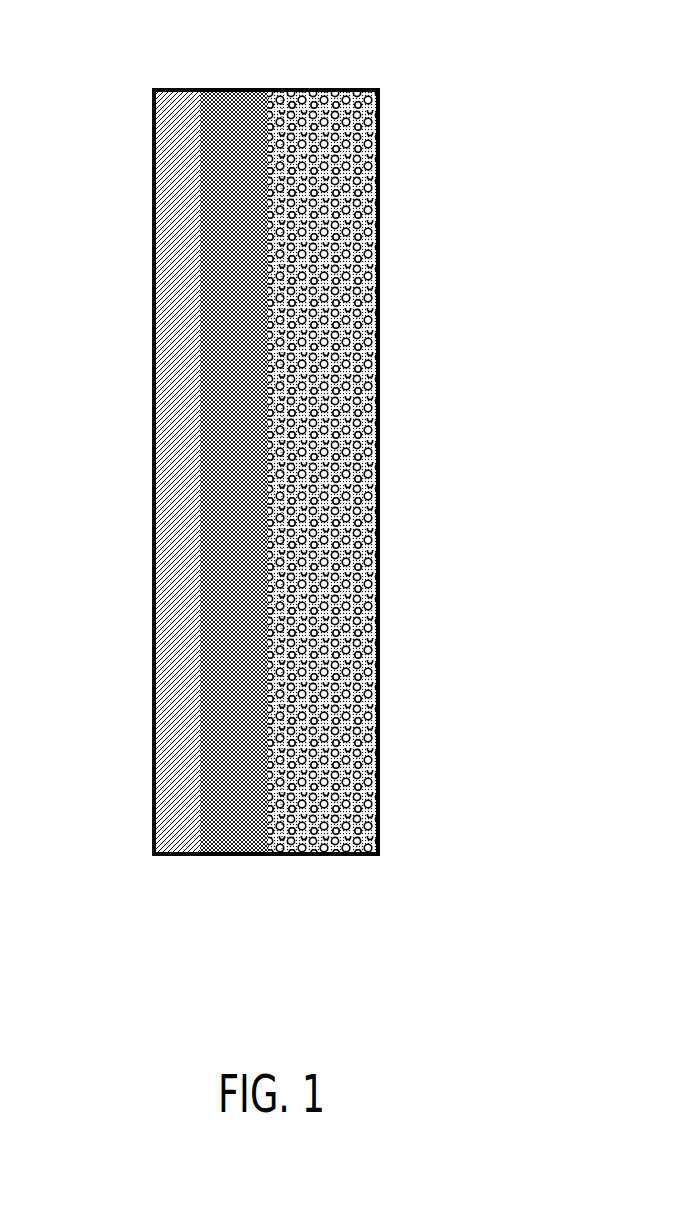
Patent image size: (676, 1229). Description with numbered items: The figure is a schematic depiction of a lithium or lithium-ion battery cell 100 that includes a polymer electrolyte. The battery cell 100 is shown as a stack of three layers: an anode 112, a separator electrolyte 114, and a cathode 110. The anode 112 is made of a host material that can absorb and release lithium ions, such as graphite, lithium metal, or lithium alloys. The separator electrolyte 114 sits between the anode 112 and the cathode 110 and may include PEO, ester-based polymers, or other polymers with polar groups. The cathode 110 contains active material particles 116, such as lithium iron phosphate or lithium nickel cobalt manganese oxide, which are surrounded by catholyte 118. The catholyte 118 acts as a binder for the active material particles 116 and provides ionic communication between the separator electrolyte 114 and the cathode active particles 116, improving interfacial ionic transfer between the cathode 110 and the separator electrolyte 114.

The battery cell 100 is at (415, 67).
The cathode 110 is at (323, 857).
The anode 112 is at (150, 827).
The separator electrolyte 114 is at (247, 88).
The active material particles 116 is at (383, 338).
The catholyte 118 is at (283, 857).